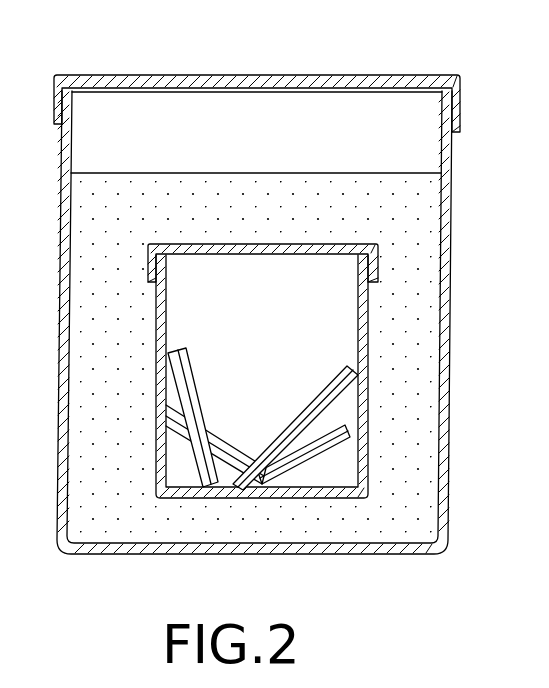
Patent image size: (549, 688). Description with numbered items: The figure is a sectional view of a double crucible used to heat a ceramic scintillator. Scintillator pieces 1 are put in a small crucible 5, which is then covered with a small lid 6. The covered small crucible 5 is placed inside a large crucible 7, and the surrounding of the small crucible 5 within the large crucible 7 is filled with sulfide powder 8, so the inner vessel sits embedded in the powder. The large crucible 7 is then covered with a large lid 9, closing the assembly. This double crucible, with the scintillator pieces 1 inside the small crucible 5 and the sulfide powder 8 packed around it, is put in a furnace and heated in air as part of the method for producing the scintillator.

The scintillator pieces 1 is at (192, 402).
The small crucible 5 is at (362, 318).
The small lid 6 is at (378, 254).
The large crucible 7 is at (450, 351).
The sulfide powder 8 is at (425, 422).
The large lid 9 is at (343, 78).